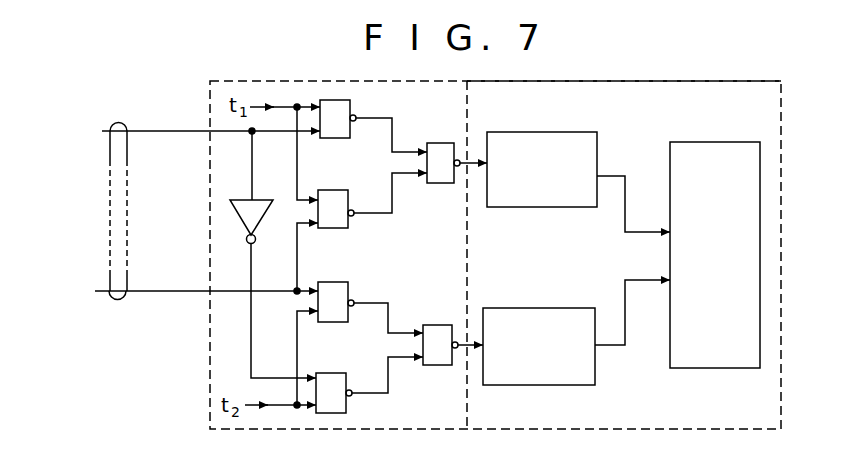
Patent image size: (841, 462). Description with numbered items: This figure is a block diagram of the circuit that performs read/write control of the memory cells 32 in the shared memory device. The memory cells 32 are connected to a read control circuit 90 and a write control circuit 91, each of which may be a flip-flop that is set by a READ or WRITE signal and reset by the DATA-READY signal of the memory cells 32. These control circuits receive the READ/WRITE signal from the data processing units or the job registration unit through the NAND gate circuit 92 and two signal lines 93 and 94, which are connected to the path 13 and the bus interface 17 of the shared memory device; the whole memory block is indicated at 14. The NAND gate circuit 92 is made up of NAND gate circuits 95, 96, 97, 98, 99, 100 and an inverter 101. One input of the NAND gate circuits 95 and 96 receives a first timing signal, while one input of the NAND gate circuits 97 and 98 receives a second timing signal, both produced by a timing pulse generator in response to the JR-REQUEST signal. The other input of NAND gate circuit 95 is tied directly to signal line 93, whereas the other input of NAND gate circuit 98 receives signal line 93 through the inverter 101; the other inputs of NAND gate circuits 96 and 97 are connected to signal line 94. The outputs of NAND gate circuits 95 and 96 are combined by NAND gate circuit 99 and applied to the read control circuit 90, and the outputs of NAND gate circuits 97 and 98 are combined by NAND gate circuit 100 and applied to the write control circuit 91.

The path 13 is at (92, 207).
The memory block 14 is at (671, 81).
The bus interface 17 is at (92, 215).
The memory cells 32 is at (711, 135).
The read control circuit 90 is at (540, 132).
The write control circuit 91 is at (530, 300).
The NAND gate circuit 92 is at (265, 85).
The signal line 93 is at (165, 130).
The signal line 94 is at (160, 291).
The NAND gate circuit 95 is at (350, 101).
The NAND gate circuit 96 is at (345, 191).
The NAND gate circuit 97 is at (347, 282).
The NAND gate circuit 98 is at (342, 373).
The NAND gate circuit 99 is at (445, 143).
The NAND gate circuit 100 is at (437, 325).
The inverter 101 is at (232, 214).